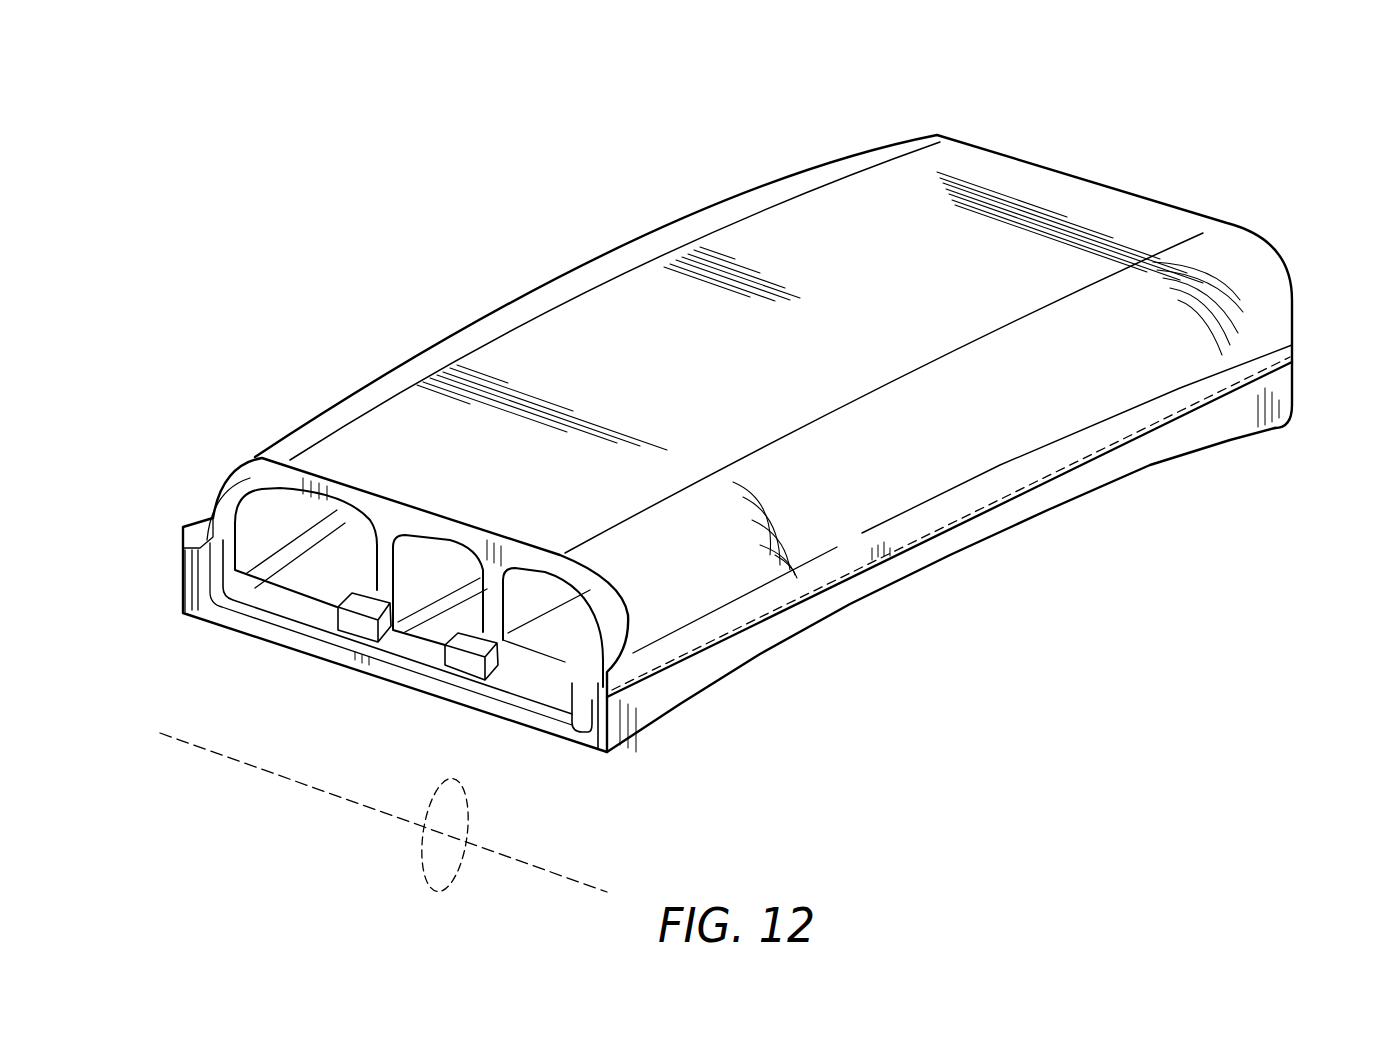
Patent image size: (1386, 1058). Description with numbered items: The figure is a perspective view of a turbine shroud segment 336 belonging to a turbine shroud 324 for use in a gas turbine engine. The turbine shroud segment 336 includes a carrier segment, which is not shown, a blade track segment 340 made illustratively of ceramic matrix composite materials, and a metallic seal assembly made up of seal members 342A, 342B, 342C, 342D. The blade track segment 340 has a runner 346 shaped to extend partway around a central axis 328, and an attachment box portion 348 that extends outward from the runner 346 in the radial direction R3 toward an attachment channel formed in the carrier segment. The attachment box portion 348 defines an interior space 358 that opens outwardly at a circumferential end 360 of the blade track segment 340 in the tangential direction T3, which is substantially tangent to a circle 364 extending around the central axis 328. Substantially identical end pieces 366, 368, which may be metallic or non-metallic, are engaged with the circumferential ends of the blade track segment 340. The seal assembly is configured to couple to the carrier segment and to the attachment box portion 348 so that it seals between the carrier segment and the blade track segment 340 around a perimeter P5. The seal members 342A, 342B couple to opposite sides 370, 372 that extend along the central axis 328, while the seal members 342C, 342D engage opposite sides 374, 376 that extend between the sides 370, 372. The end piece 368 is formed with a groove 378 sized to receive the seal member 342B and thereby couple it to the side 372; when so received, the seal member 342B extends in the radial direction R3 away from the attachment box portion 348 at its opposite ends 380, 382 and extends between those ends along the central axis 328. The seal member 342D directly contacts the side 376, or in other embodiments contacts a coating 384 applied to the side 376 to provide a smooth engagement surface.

The turbine shroud 324 is at (1163, 90).
The turbine shroud segment 336 is at (1055, 128).
The blade track segment 340 is at (1127, 220).
The seal member 342A is at (1023, 350).
The seal member 342B is at (260, 630).
The seal member 342C is at (638, 320).
The seal member 342D is at (983, 518).
The runner 346 is at (673, 673).
The attachment box portion 348 is at (1243, 273).
The interior space 358 is at (305, 553).
The circumferential end 360 is at (1277, 173).
The circle 364 is at (427, 867).
The end piece 366 is at (1237, 352).
The end piece 368 is at (200, 613).
The side 370 is at (1173, 203).
The side 372 is at (383, 565).
The side 374 is at (522, 283).
The side 376 is at (1047, 412).
The groove 378 is at (187, 567).
The end 380 is at (187, 597).
The end 382 is at (590, 700).
The coating 384 is at (870, 572).
The perimeter P5 is at (1127, 333).
The radial direction R3 is at (573, 940).
The tangential direction T3 is at (410, 725).
The central axis 328 is at (357, 807).